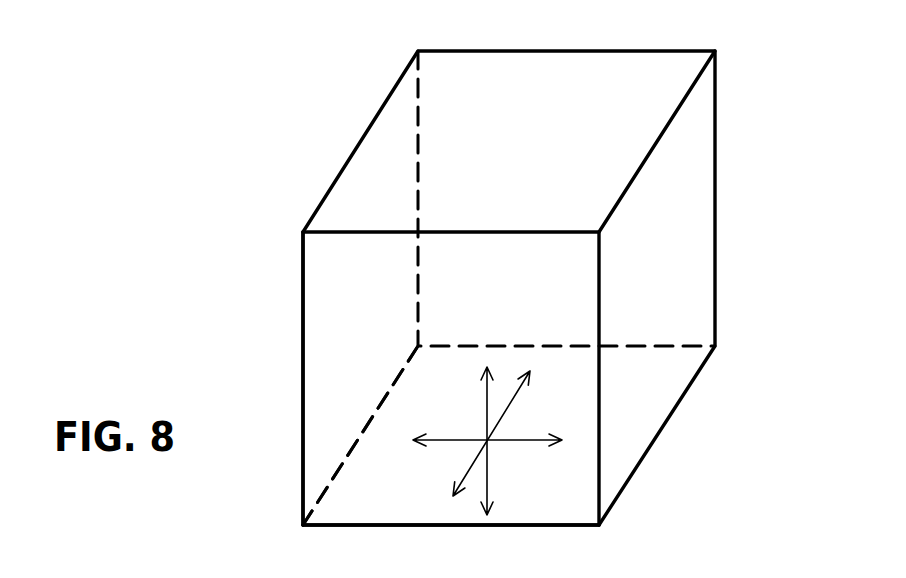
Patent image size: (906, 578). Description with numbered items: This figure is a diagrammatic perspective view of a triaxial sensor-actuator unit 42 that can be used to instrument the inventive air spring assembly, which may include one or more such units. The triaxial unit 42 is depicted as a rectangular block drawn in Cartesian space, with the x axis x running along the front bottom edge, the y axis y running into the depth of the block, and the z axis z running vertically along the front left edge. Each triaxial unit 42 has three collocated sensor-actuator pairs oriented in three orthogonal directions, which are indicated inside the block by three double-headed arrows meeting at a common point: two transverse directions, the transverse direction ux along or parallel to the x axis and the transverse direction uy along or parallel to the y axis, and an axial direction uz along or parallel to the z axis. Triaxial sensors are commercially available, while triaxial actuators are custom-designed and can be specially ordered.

The triaxial sensor-actuator unit 42 is at (768, 157).
The x axis x is at (451, 532).
The y axis y is at (360, 435).
The z axis z is at (291, 378).
The transverse direction ux is at (487, 455).
The transverse direction uy is at (507, 433).
The axial direction uz is at (469, 440).